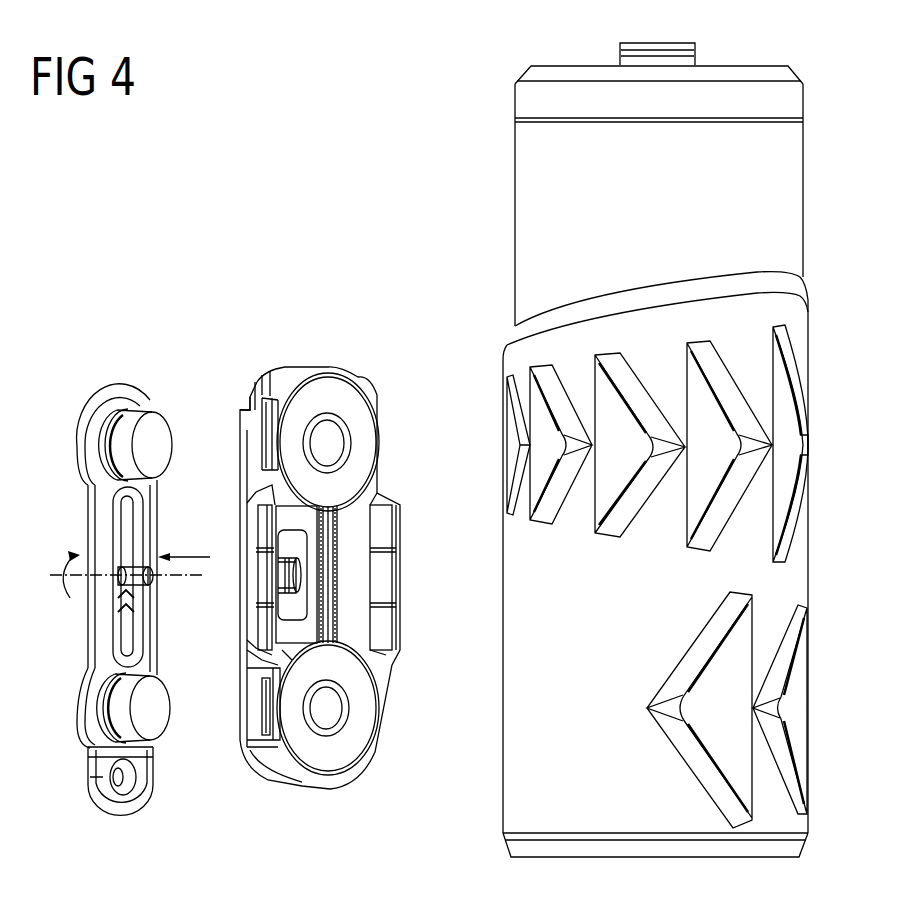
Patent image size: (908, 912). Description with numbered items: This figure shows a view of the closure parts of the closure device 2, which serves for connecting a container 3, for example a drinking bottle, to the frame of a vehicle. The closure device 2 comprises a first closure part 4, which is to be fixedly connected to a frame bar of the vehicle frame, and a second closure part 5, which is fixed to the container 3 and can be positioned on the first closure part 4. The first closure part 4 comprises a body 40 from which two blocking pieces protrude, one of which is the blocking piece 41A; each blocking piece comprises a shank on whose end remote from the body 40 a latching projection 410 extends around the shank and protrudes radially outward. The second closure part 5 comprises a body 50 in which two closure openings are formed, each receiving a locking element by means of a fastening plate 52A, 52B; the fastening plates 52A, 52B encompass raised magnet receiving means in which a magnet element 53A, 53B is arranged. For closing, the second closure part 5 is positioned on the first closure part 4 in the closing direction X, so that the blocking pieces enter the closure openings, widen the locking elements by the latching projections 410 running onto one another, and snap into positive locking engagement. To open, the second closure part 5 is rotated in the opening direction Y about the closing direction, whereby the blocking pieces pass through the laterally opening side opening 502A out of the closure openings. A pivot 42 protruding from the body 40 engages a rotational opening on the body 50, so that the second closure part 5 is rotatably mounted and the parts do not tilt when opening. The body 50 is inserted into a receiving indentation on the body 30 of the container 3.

The closure device 2 is at (257, 272).
The container 3 is at (796, 823).
The first closure part 4 is at (135, 620).
The second closure part 5 is at (300, 805).
The body of the container 30 is at (806, 571).
The body of the first closure part 40 is at (162, 722).
The blocking piece 41A is at (158, 450).
The pivot 42 is at (150, 579).
The body of the second closure part 50 is at (320, 582).
The fastening plate 52A is at (363, 432).
The fastening plate 52B is at (363, 734).
The magnet element 53A is at (330, 440).
The magnet element 53B is at (328, 710).
The latching projection 410 is at (143, 412).
The side opening 502A is at (240, 430).